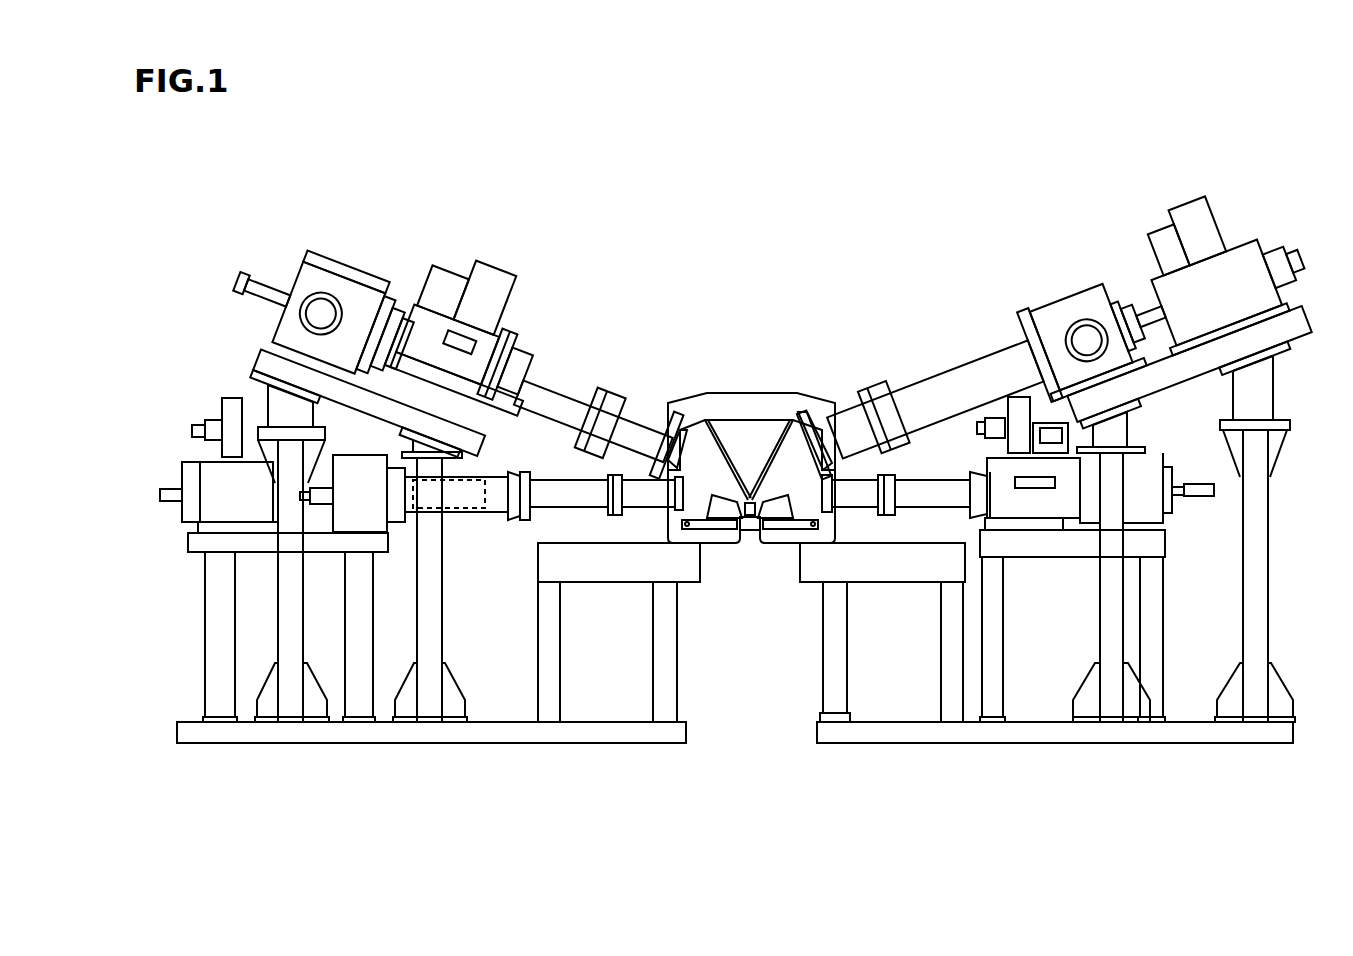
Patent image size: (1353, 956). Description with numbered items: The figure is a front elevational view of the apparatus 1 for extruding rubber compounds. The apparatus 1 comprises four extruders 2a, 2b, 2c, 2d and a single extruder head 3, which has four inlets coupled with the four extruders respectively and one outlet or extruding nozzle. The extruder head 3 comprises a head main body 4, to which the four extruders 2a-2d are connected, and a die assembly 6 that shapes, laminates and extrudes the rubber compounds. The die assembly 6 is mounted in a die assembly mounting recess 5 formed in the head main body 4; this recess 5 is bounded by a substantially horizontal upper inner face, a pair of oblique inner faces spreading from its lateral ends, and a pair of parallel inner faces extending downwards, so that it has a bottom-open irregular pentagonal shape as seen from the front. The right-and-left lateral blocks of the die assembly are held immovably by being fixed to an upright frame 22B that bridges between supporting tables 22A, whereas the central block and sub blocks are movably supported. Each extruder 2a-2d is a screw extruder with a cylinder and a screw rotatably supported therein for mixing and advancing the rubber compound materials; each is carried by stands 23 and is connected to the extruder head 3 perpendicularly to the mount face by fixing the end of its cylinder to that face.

The apparatus 1 is at (912, 302).
The extruder 2a is at (1000, 340).
The extruder 2b is at (582, 392).
The extruder 2c is at (550, 470).
The extruder 2d is at (935, 472).
The extruder head 3 is at (808, 388).
The head main body 4 is at (694, 440).
The die assembly mounting recess 5 is at (750, 527).
The die assembly 6 is at (749, 496).
The supporting table 22A is at (600, 585).
The upright frame 22B is at (838, 522).
The stand 23 is at (1005, 690).